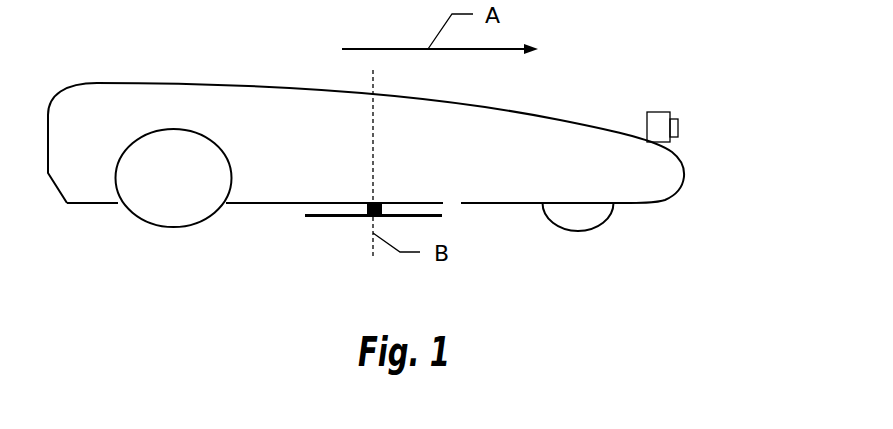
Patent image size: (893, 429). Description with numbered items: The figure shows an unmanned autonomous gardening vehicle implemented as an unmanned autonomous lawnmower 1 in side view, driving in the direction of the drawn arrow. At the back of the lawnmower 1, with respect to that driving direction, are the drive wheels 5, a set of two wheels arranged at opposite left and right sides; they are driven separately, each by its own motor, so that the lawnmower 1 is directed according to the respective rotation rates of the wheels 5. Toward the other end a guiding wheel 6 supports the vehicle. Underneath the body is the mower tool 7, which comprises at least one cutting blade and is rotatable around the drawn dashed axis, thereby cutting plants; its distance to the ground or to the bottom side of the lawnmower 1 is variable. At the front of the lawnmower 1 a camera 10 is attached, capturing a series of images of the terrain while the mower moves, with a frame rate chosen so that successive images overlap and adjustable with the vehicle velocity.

The unmanned autonomous lawnmower 1 is at (164, 34).
The drive wheels 5 is at (158, 198).
The guiding wheel 6 is at (582, 217).
The mower tool 7 is at (365, 217).
The camera 10 is at (665, 120).